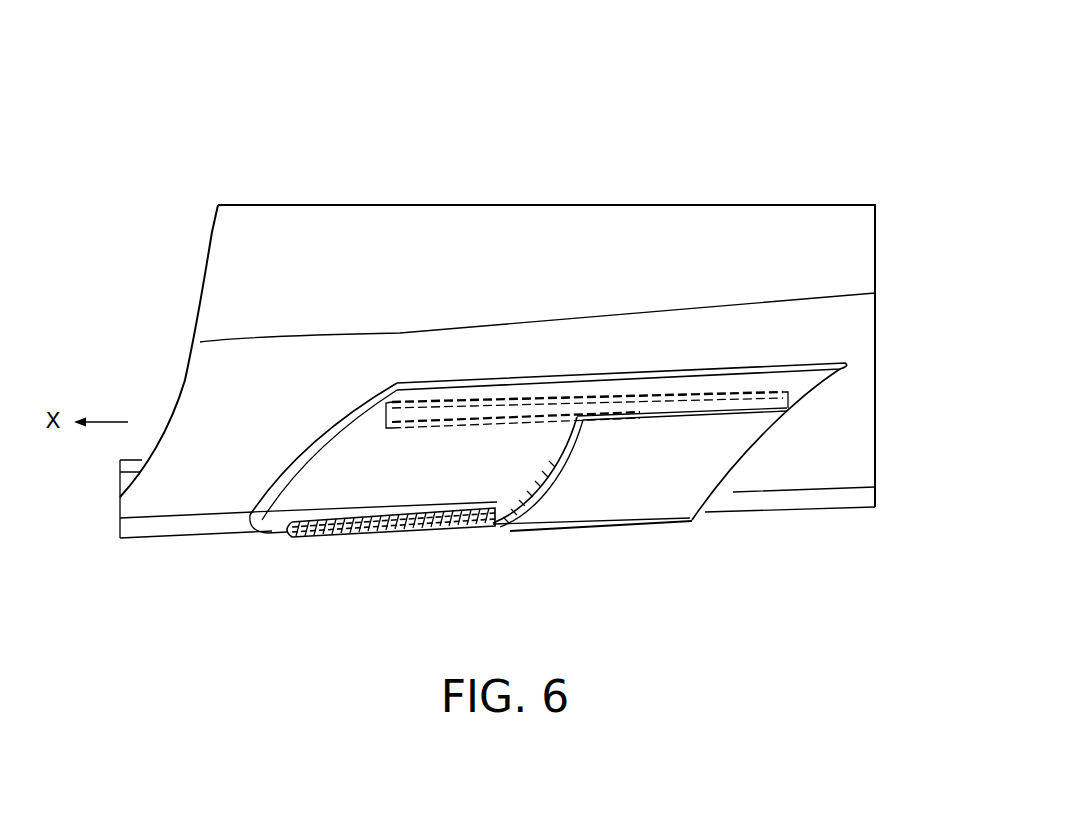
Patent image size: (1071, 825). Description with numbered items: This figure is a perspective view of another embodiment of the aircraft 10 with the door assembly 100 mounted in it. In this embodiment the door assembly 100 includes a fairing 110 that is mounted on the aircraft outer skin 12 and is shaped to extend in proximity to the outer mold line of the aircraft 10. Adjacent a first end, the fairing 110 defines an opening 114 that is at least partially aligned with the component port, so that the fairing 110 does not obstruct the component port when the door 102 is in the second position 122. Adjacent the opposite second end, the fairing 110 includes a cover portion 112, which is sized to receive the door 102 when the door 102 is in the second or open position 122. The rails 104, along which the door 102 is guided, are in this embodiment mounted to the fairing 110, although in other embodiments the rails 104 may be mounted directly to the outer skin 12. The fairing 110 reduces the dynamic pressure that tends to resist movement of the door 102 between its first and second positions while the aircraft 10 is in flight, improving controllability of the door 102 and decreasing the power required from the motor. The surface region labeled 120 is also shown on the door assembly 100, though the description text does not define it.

The aircraft 10 is at (868, 167).
The aircraft outer skin 12 is at (205, 372).
The door assembly 100 is at (619, 636).
The door 102 is at (718, 480).
The rails 104 is at (517, 403).
The fairing 110 is at (357, 437).
The cover portion 112 is at (432, 478).
The opening 114 is at (576, 542).
The side face 120 is at (681, 474).
The second position 122 is at (476, 484).